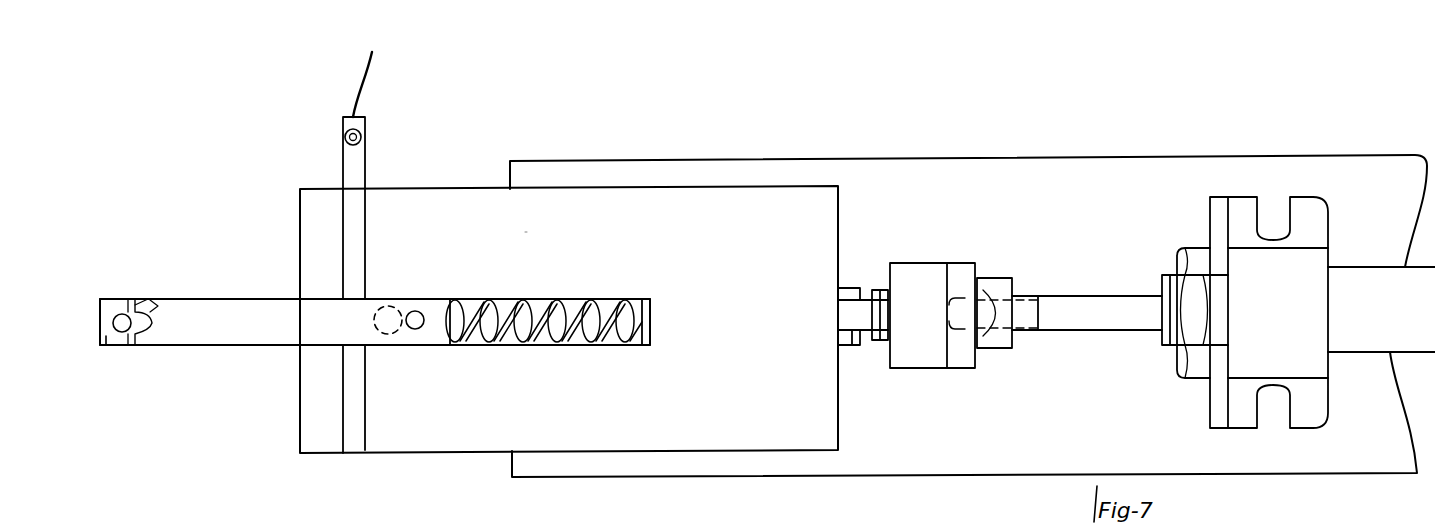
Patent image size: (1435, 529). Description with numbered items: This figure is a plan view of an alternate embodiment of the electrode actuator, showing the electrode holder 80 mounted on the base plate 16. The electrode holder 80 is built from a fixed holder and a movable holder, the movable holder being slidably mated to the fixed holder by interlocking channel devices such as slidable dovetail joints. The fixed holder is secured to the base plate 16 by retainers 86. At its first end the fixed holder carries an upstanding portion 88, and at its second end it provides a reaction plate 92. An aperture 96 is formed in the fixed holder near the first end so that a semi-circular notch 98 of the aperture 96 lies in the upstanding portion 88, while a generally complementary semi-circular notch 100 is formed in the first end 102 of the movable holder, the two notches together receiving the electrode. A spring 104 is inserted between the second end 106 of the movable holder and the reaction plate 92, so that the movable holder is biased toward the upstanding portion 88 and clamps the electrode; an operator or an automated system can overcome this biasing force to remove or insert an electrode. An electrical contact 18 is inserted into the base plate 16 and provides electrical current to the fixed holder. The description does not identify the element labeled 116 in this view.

The base plate 16 is at (460, 206).
The electrical contact 18 is at (355, 172).
The electrode holder 80 is at (251, 317).
The retainers 86 is at (390, 318).
The upstanding portion 88 is at (107, 348).
The reaction plate 92 is at (647, 307).
The aperture 96 is at (125, 304).
The semi-circular notch 98 is at (102, 300).
The semi-circular notch 100 is at (143, 331).
The first end 102 is at (150, 305).
The spring 104 is at (544, 293).
The second end 106 is at (530, 220).
The outer housing 116 is at (606, 528).